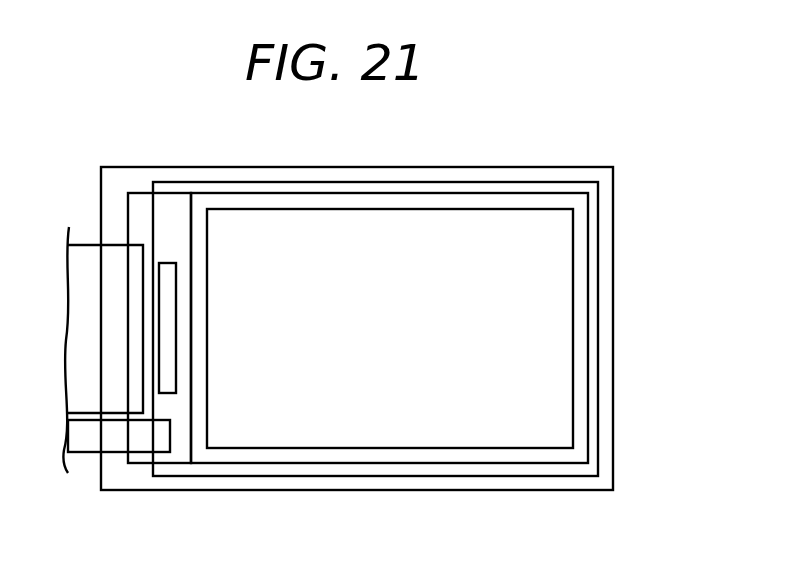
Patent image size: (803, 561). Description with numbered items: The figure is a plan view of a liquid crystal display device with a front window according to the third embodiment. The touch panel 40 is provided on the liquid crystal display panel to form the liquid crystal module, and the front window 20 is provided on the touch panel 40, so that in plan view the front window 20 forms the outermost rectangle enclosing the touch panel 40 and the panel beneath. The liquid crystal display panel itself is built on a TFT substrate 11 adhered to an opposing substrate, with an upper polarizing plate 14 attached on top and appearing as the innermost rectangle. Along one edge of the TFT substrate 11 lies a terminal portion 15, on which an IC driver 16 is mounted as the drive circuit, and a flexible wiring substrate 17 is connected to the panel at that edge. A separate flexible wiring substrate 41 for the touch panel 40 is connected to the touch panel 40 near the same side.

The TFT substrate 11 is at (588, 313).
The upper polarizing plate 14 is at (573, 267).
The terminal portion 15 is at (133, 193).
The IC driver 16 is at (167, 263).
The flexible wiring substrate 17 is at (82, 245).
The front window 20 is at (613, 420).
The touch panel 40 is at (598, 357).
The flexible wiring substrate for the touch panel 41 is at (85, 453).